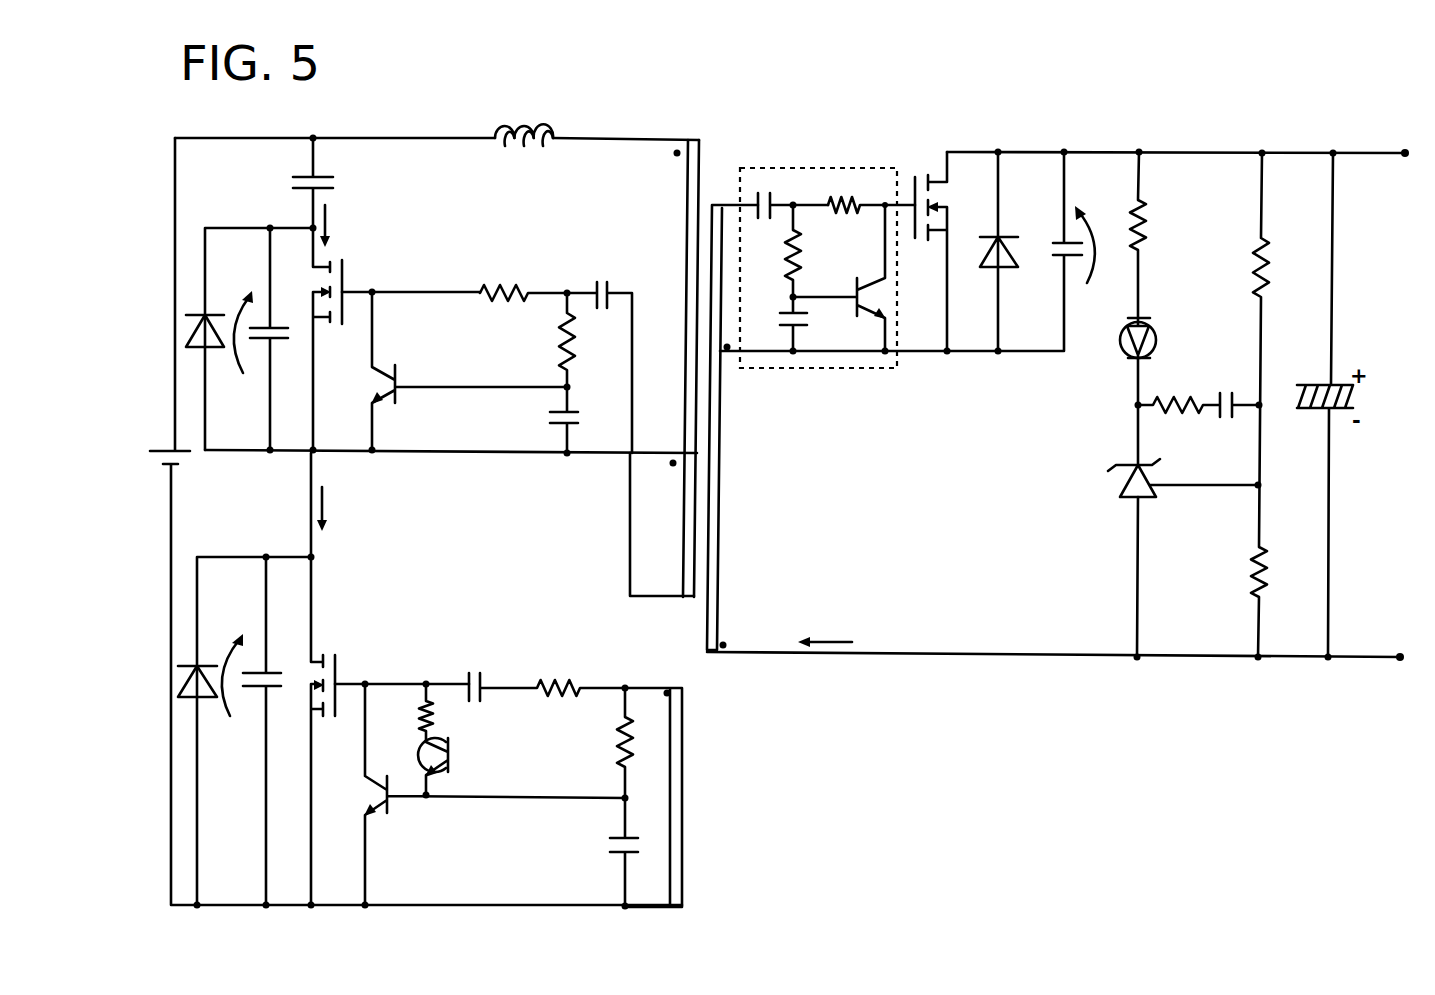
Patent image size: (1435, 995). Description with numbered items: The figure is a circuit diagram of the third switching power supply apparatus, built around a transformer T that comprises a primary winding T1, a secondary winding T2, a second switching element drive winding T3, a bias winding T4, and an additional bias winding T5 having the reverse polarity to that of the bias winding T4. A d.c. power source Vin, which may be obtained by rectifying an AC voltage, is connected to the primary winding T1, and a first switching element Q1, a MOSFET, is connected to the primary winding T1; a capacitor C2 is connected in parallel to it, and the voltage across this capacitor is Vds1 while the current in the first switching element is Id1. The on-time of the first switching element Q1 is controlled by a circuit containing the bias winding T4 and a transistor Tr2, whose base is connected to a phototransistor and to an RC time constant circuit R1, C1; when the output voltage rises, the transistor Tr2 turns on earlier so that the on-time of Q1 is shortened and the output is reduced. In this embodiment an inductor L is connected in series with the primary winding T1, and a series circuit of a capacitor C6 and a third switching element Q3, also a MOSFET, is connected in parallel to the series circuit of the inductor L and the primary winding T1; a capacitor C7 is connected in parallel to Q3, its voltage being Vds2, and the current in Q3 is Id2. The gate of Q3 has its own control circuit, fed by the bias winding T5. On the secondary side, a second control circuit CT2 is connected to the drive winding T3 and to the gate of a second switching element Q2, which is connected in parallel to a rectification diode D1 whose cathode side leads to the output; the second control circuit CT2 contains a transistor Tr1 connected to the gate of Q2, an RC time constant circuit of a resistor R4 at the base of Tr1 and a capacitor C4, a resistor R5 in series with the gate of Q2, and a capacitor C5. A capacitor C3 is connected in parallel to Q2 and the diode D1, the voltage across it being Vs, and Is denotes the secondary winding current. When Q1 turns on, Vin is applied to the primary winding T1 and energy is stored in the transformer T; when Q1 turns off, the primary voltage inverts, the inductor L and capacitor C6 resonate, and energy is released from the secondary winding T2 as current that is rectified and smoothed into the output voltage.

The inductor L is at (524, 121).
The capacitor C6 is at (296, 182).
The current flowing in the third switching element Id2 is at (347, 226).
The third switching element Q3 is at (396, 339).
The voltage across capacitor C7 Vds2 is at (239, 321).
The capacitor C7 is at (276, 339).
The d.c. power source Vin is at (143, 435).
The current flowing in the first switching element Id1 is at (343, 509).
The first switching element Q1 is at (390, 731).
The voltage across capacitor C2 Vds1 is at (239, 660).
The capacitor C2 is at (268, 731).
The transistor Tr2 is at (494, 795).
The resistor R1 is at (605, 743).
The capacitor C1 is at (606, 854).
The transformer T is at (694, 513).
The primary winding T1 is at (675, 368).
The bias winding T5 is at (662, 524).
The bias winding T4 is at (656, 786).
The second switching element drive winding T3 is at (732, 414).
The secondary winding T2 is at (741, 554).
The second control circuit CT2 is at (827, 243).
The capacitor C5 is at (790, 196).
The resistor R5 is at (871, 193).
The resistor R4 is at (773, 250).
The capacitor C4 is at (776, 324).
The transistor Tr1 is at (841, 280).
The second switching element Q2 is at (938, 238).
The rectification diode D1 is at (1008, 252).
The capacitor C3 is at (1059, 250).
The voltage across capacitor C3 Vs is at (1089, 262).
The secondary winding current Is is at (839, 643).